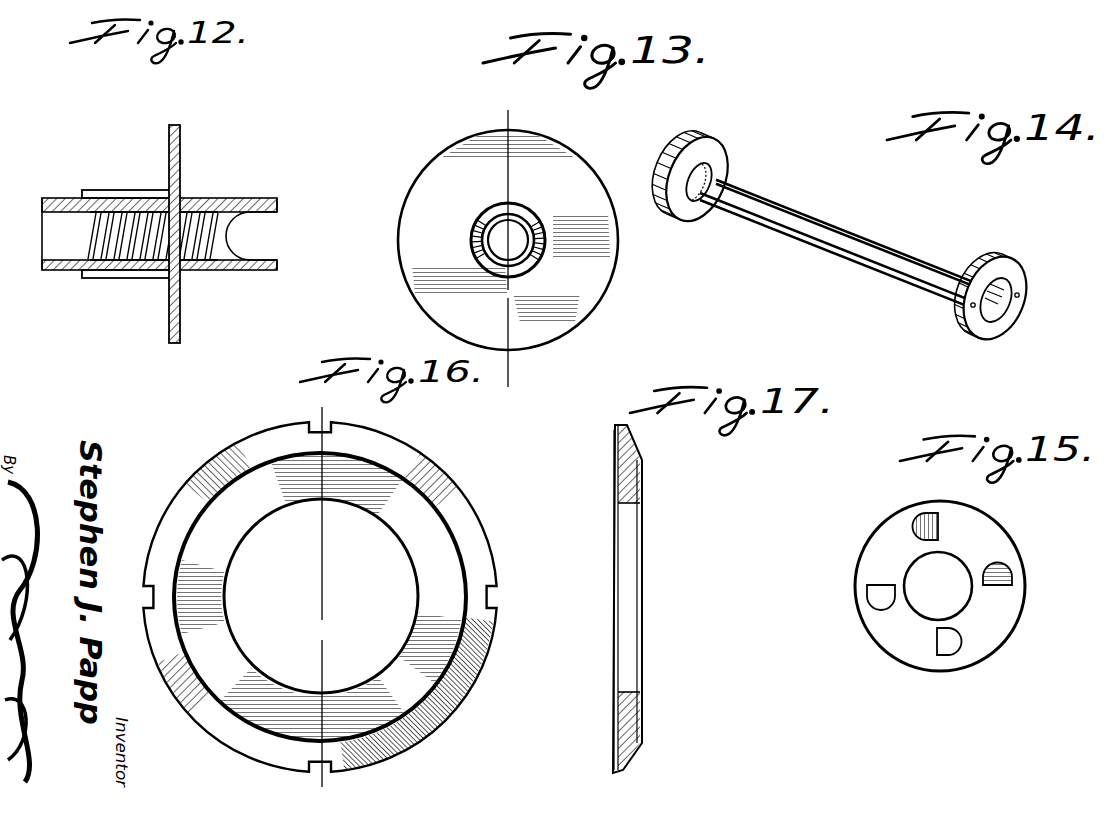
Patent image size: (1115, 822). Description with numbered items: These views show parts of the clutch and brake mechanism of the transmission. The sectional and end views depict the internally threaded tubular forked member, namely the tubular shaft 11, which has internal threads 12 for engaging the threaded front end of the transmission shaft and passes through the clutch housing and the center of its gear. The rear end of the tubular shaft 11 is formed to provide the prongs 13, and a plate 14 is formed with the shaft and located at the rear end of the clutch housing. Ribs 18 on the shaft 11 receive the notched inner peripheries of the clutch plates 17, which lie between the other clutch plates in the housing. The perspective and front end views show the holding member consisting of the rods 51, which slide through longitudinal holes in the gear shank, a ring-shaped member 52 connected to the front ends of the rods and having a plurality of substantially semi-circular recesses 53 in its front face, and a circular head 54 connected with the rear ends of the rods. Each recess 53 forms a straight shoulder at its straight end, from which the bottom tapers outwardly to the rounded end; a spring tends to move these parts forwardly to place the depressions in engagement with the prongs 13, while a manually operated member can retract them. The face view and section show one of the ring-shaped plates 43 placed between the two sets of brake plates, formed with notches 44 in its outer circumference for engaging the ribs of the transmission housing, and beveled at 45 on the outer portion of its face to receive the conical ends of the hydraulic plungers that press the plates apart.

In FIG. 12, the tubular shaft 11 is at (217, 200).
In FIG. 13, the tubular shaft 11 is at (489, 215).
In FIG. 12, the internal threads 12 is at (142, 276).
In FIG. 13, the internal threads 12 is at (517, 244).
In FIG. 12, the prongs 13 is at (281, 205).
In FIG. 13, the prongs 13 is at (471, 241).
In FIG. 12, the plate 14 is at (182, 323).
In FIG. 13, the plate 14 is at (596, 283).
In FIG. 16, the plates 17 is at (326, 594).
In FIG. 12, the ribs 18 is at (131, 190).
In FIG. 16, the ring-shaped plates 43 is at (415, 672).
In FIG. 17, the ring-shaped plates 43 is at (633, 718).
In FIG. 16, the notches 44 is at (497, 599).
In FIG. 17, the notches 44 is at (618, 427).
In FIG. 16, the beveled portion 45 is at (447, 715).
In FIG. 17, the beveled portion 45 is at (632, 754).
In FIG. 14, the rods 51 is at (909, 288).
In FIG. 14, the ring-shaped member 52 is at (668, 217).
In FIG. 15, the ring-shaped member 52 is at (1006, 628).
In FIG. 15, the recesses 53 is at (938, 527).
In FIG. 14, the circular head 54 is at (987, 333).